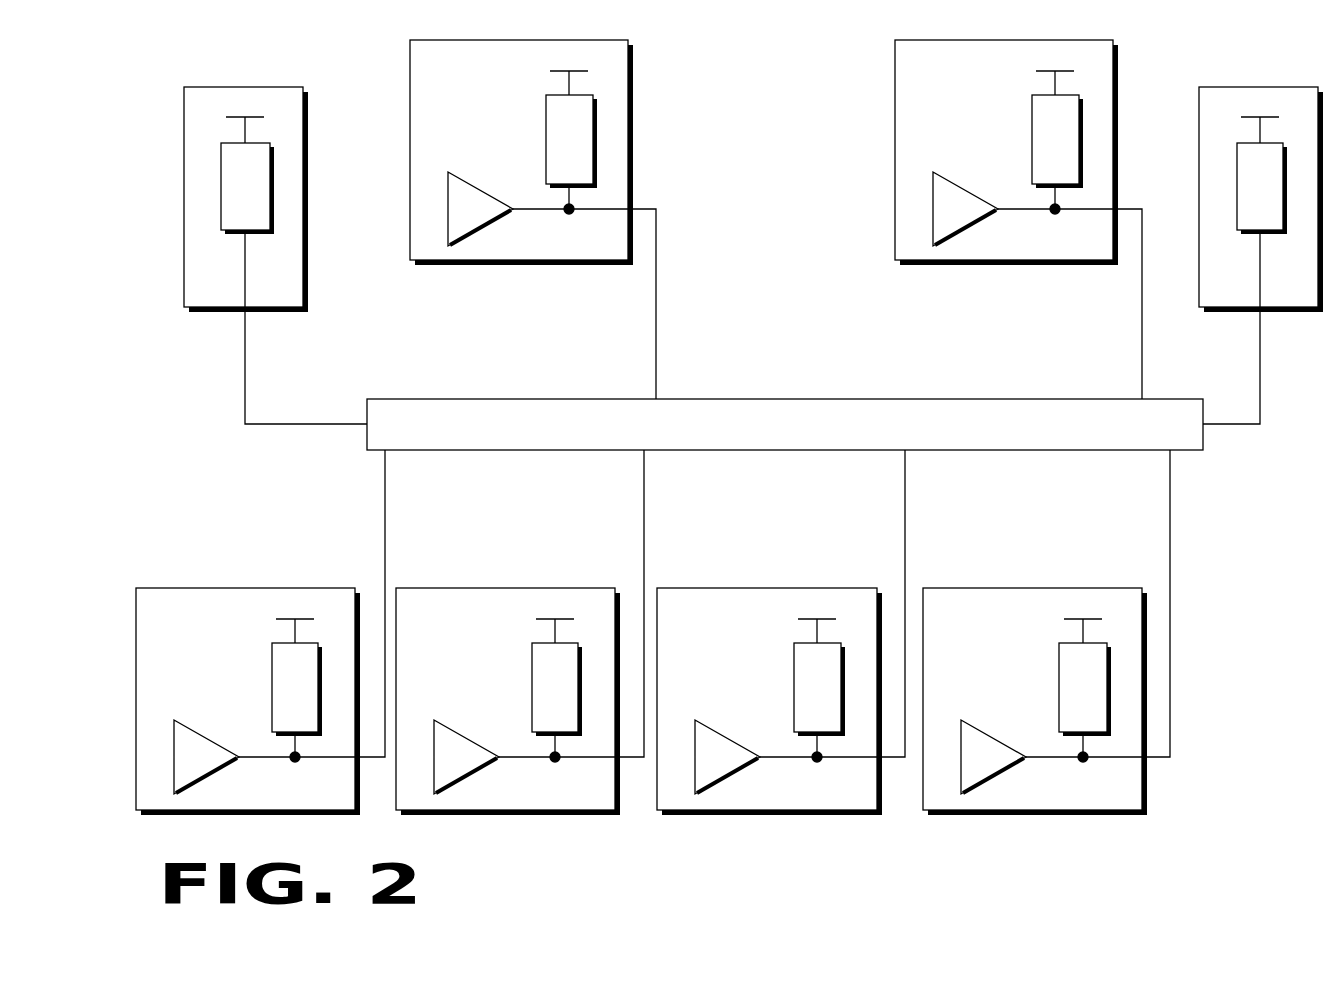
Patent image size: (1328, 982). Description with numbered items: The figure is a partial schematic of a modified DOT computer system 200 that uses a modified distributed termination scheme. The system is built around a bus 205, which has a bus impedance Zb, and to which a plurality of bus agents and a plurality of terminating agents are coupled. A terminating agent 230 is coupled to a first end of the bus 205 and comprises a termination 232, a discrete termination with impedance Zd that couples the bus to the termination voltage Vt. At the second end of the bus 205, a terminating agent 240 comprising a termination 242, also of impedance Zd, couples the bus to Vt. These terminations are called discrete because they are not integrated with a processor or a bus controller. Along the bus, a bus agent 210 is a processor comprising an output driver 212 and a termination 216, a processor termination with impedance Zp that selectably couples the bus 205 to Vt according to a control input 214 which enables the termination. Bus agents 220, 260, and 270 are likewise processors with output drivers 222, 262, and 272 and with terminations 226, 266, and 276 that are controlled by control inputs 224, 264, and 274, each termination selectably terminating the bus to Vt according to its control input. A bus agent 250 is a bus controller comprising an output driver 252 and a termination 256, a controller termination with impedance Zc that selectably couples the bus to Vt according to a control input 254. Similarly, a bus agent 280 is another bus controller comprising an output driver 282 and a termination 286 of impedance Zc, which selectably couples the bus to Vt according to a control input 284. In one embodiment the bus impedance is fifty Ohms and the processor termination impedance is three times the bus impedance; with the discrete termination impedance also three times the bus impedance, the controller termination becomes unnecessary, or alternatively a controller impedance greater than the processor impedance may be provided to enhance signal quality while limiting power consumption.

The modified DOT computer system 200 is at (728, 465).
The bus 205 is at (1176, 442).
The bus agent 210 is at (619, 254).
The output driver 212 is at (487, 220).
The control input 214 is at (546, 139).
The termination 216 is at (587, 177).
The bus agent 220 is at (1104, 254).
The output driver 222 is at (972, 220).
The control input 224 is at (1032, 139).
The termination 226 is at (1073, 177).
The terminating agent 230 is at (294, 301).
The termination 232 is at (262, 223).
The terminating agent 240 is at (1309, 301).
The termination 242 is at (1278, 223).
The bus agent 250 is at (346, 804).
The output driver 252 is at (213, 768).
The control input 254 is at (272, 687).
The termination 256 is at (313, 725).
The bus agent 260 is at (606, 804).
The output driver 262 is at (473, 768).
The control input 264 is at (532, 687).
The termination 266 is at (573, 725).
The bus agent 270 is at (868, 804).
The output driver 272 is at (734, 768).
The control input 274 is at (794, 687).
The termination 276 is at (835, 725).
The bus agent 280 is at (1133, 804).
The output driver 282 is at (1000, 768).
The control input 284 is at (1059, 687).
The termination 286 is at (1100, 725).